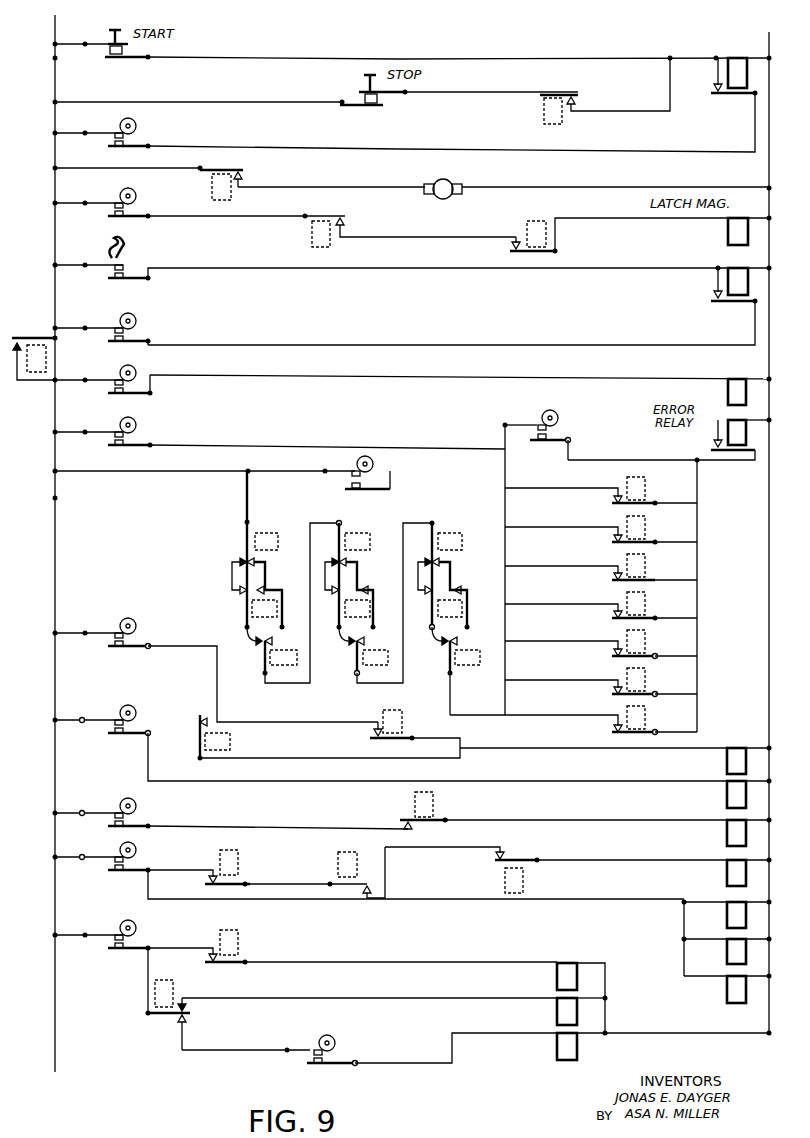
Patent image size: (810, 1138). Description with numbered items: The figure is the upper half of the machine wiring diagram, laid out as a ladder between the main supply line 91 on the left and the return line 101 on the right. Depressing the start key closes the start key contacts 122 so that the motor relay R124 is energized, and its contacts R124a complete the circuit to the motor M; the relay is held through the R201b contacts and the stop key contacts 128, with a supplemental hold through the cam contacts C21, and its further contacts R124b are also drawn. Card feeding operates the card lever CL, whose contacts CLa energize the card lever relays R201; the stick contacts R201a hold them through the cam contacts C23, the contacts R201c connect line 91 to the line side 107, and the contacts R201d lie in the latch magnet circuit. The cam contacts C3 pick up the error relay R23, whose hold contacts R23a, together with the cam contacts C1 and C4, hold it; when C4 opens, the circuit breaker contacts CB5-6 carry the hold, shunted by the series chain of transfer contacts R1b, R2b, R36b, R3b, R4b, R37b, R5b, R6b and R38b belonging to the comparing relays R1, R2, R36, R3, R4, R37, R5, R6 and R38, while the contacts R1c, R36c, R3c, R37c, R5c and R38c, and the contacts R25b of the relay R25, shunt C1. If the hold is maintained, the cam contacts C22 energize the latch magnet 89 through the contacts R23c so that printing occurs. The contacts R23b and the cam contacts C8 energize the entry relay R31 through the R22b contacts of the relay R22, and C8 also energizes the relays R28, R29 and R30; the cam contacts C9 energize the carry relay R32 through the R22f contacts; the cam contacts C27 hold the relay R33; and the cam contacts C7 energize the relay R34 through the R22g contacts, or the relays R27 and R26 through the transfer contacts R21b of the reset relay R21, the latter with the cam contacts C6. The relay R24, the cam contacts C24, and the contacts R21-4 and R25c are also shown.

The line 91 is at (55, 56).
The line 101 is at (769, 168).
The line side 107 is at (55, 564).
The start key contacts 122 is at (128, 58).
The stop key contacts 128 is at (382, 97).
The latch magnet 89 is at (728, 239).
The motor M is at (446, 186).
The cam contacts C21 is at (138, 141).
The cam contacts C22 is at (139, 204).
The cam contacts C23 is at (139, 338).
The cam contacts C3 is at (137, 392).
The cam contacts C4 is at (140, 444).
The cam contacts C1 is at (562, 434).
The cam contacts C24 is at (108, 642).
The cam contacts C27 is at (108, 736).
The cam contacts C9 is at (139, 820).
The cam contacts C8 is at (139, 865).
The cam contacts C7 is at (108, 950).
The cam contacts C6 is at (340, 1058).
The card lever CL is at (112, 246).
The card lever contacts CLa is at (138, 272).
The circuit breaker contacts CB5-6 is at (345, 469).
The motor relay R124 is at (737, 62).
The relay contacts R124a is at (246, 178).
The relay contacts R124b is at (709, 95).
The relays R201 is at (738, 279).
The stick contacts R201a is at (711, 300).
The relay contacts R201b is at (582, 99).
The card lever contacts R201c is at (32, 327).
The card lever relay contacts R201d is at (348, 225).
The relay R23 is at (728, 428).
The hold contacts R23a is at (711, 453).
The relay contacts R23b is at (204, 886).
The relay contacts R23c is at (508, 246).
The relay R25 is at (402, 728).
The relay contacts R25b is at (612, 500).
The relay contacts R25c is at (360, 759).
The relay R1 is at (264, 533).
The transfer contacts R1b is at (240, 563).
The relay contacts R1c is at (612, 540).
The relay R2 is at (252, 610).
The transfer contacts R2b is at (232, 587).
The relay R3 is at (360, 533).
The transfer contacts R3b is at (346, 562).
The relay contacts R3c is at (612, 616).
The relay R4 is at (370, 612).
The transfer contacts R4b is at (356, 590).
The relay R5 is at (452, 533).
The transfer contacts R5b is at (440, 562).
The relay contacts R5c is at (612, 692).
The relay R6 is at (462, 608).
The transfer contacts R6b is at (450, 590).
The relay R36 is at (287, 665).
The transfer contacts R36b is at (247, 637).
The relay contacts R36c is at (612, 578).
The relay R37 is at (378, 665).
The transfer contacts R37b is at (352, 642).
The relay contacts R37c is at (612, 654).
The relay R38 is at (470, 665).
The transfer contacts R38b is at (446, 642).
The relay contacts R38c is at (612, 730).
The relay R21 is at (230, 742).
The relay contacts R21-4 is at (203, 716).
The transfer contacts R21b is at (192, 1016).
The relay R22 is at (433, 805).
The interlock relay contacts R22b is at (506, 853).
The interlock relay contacts R22f is at (400, 827).
The relay contacts R22g is at (203, 963).
The relay R24 is at (727, 760).
The relay R26 is at (557, 1010).
The relay R27 is at (557, 1047).
The relay R28 is at (727, 913).
The relay R29 is at (727, 952).
The relay R30 is at (727, 991).
The relay R31 is at (727, 873).
The relay R32 is at (727, 832).
The relay R33 is at (727, 795).
The total print control relay R34 is at (557, 975).